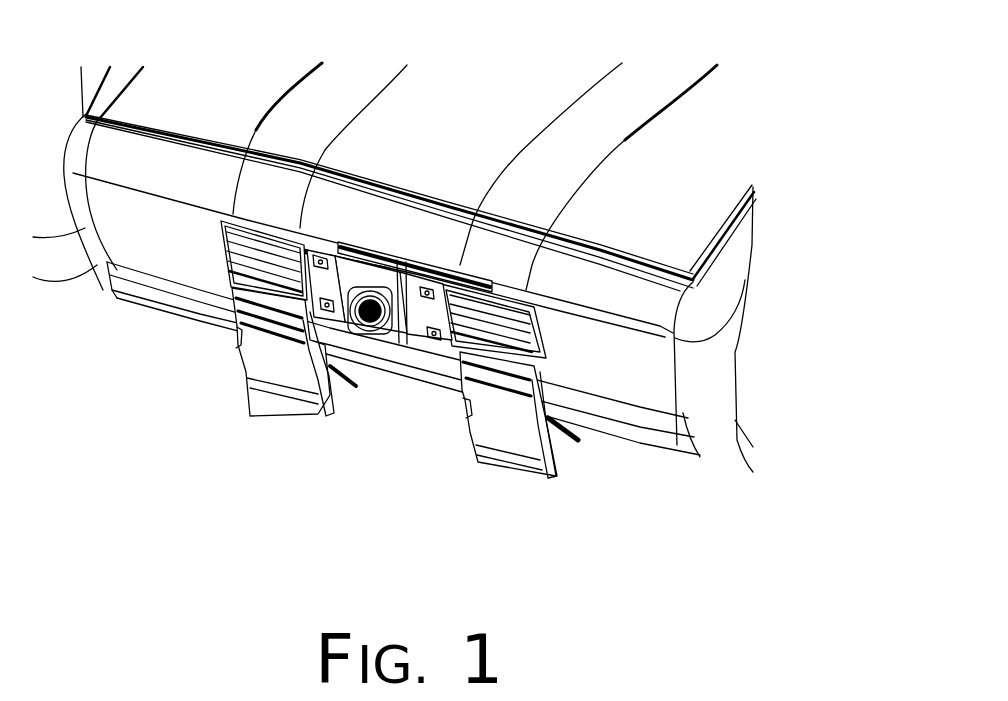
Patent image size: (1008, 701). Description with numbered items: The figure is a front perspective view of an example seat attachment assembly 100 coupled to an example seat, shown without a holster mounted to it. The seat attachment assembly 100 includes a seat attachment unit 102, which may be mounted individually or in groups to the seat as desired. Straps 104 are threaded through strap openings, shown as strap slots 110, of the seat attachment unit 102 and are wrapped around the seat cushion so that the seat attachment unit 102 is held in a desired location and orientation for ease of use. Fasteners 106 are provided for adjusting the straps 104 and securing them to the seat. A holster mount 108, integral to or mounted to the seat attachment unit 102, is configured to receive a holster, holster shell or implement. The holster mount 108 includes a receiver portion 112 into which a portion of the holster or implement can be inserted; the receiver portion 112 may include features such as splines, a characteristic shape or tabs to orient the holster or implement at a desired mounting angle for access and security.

The seat attachment assembly 100 is at (749, 17).
The seat attachment unit 102 is at (548, 326).
The strap 104 is at (282, 131).
The fastener 106 is at (250, 364).
The holster mount 108 is at (373, 245).
The strap slot 110 is at (247, 264).
The receiver portion 112 is at (384, 318).